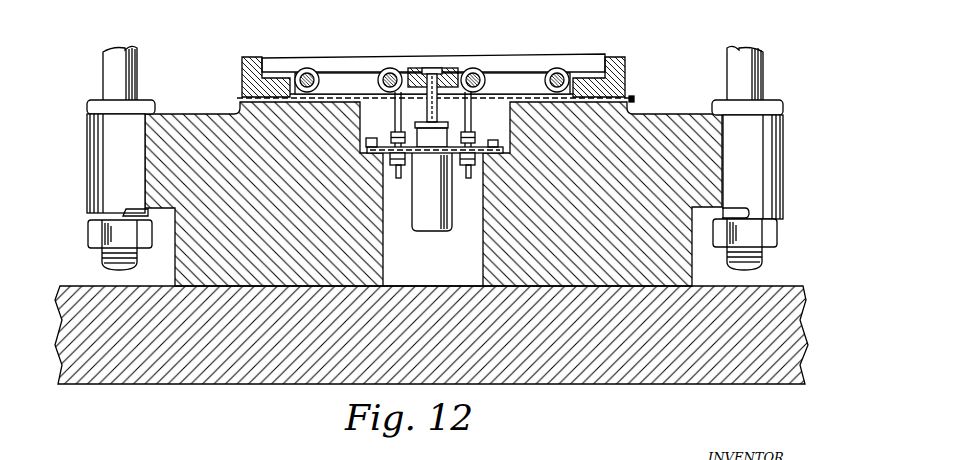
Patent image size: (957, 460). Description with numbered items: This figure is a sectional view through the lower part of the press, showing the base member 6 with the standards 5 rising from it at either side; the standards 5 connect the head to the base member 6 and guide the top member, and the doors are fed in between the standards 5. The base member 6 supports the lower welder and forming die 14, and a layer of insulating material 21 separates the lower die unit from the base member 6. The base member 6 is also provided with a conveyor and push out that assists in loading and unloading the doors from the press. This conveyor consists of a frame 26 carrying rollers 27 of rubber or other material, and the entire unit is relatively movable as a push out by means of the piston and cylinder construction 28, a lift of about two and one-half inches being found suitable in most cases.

The standards 5 is at (112, 65).
The base member 6 is at (660, 115).
The lower welder and forming die 14 is at (625, 68).
The layer of insulating material 21 is at (240, 107).
The frame 26 is at (505, 73).
The rollers 27 is at (383, 68).
The piston and cylinder construction 28 is at (428, 210).